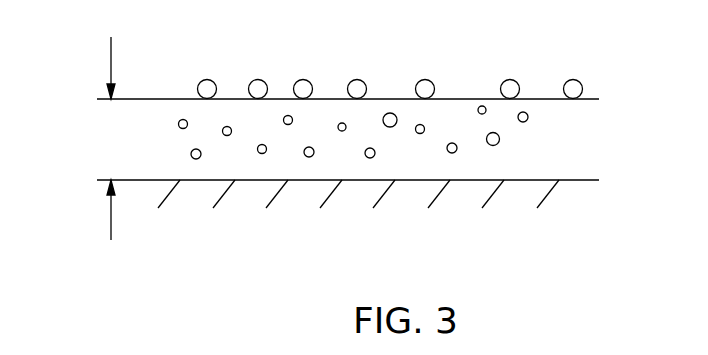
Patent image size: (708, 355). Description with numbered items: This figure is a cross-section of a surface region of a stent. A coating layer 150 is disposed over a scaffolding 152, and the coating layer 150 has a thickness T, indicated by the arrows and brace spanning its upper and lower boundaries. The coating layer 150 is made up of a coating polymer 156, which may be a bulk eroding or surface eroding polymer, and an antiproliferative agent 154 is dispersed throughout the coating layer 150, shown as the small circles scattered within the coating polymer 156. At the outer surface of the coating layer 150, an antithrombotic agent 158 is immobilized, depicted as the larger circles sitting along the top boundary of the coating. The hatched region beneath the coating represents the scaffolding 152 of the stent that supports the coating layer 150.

The coating layer 150 is at (90, 99).
The scaffolding 152 is at (555, 188).
The antiproliferative agent 154 is at (493, 146).
The coating polymer 156 is at (557, 148).
The antithrombotic agent 158 is at (211, 79).